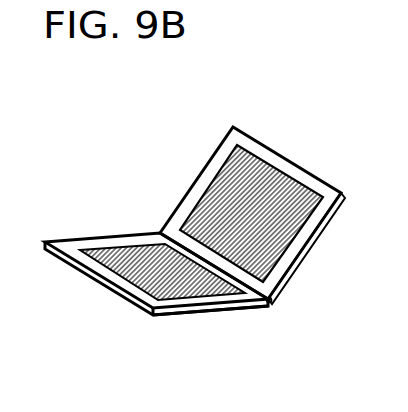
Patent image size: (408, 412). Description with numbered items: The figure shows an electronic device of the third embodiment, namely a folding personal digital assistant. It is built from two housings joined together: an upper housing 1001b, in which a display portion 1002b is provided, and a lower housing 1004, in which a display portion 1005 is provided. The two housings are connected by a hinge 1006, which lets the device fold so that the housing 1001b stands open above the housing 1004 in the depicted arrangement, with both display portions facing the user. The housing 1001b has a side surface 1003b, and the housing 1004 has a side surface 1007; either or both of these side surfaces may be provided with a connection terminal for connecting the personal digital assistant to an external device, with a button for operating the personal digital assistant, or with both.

The housing 1001b is at (207, 163).
The display portion 1002b is at (267, 172).
The side surface 1003b is at (343, 204).
The housing 1004 is at (70, 262).
The display portion 1005 is at (123, 282).
The hinge 1006 is at (272, 298).
The side surface 1007 is at (225, 311).